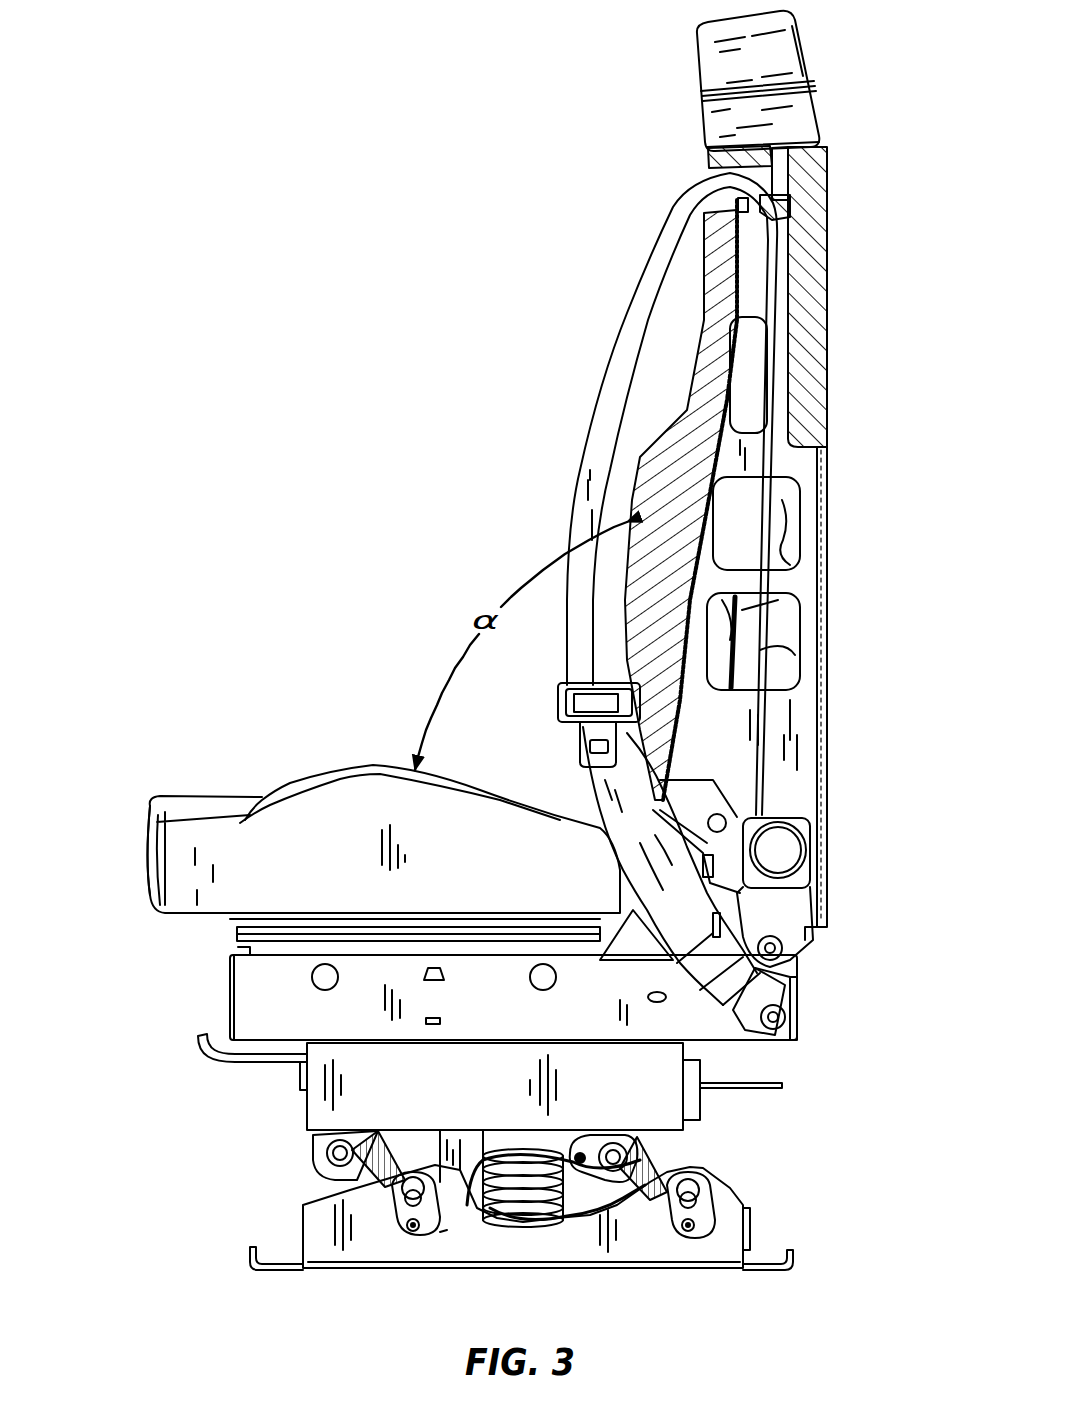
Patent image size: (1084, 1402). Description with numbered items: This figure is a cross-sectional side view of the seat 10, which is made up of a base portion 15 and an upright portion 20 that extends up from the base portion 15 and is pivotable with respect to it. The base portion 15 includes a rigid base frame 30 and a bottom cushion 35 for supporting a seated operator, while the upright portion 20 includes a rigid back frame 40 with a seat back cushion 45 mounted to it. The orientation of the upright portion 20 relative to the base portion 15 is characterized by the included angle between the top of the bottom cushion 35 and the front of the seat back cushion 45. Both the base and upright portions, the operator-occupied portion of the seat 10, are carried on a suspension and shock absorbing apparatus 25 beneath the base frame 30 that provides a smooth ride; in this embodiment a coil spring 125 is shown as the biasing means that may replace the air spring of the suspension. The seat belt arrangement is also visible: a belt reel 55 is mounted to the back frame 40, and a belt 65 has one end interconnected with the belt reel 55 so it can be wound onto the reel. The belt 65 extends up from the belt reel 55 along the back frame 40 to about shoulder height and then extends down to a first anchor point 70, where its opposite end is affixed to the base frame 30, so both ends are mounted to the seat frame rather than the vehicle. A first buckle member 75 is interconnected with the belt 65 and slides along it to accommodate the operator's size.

The seat 10 is at (408, 378).
The base portion 15 is at (158, 886).
The upright portion 20 is at (700, 97).
The suspension and shock absorbing apparatus 25 is at (246, 1149).
The base frame 30 is at (250, 998).
The bottom cushion 35 is at (317, 808).
The back frame 40 is at (805, 695).
The seat back cushion 45 is at (670, 462).
The belt reel 55 is at (790, 850).
The belt 65 is at (607, 387).
The first anchor point 70 is at (785, 1000).
The first buckle member 75 is at (558, 703).
The coil spring 125 is at (557, 1225).